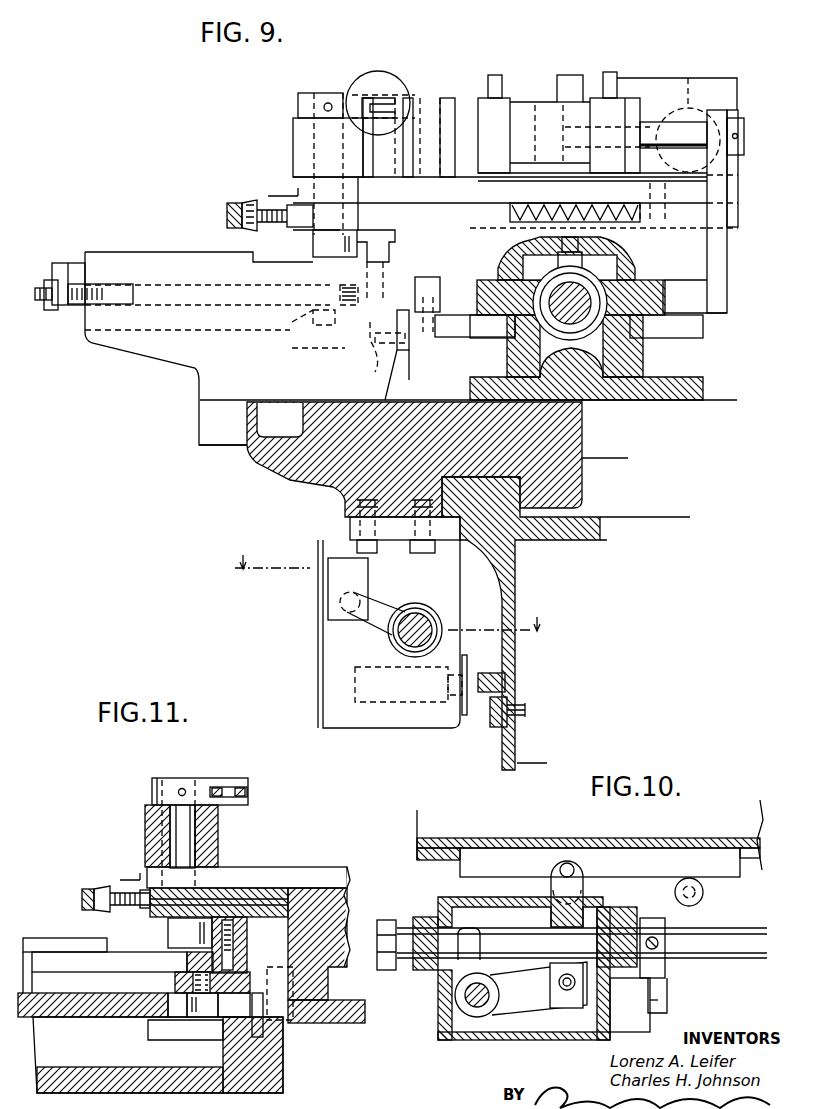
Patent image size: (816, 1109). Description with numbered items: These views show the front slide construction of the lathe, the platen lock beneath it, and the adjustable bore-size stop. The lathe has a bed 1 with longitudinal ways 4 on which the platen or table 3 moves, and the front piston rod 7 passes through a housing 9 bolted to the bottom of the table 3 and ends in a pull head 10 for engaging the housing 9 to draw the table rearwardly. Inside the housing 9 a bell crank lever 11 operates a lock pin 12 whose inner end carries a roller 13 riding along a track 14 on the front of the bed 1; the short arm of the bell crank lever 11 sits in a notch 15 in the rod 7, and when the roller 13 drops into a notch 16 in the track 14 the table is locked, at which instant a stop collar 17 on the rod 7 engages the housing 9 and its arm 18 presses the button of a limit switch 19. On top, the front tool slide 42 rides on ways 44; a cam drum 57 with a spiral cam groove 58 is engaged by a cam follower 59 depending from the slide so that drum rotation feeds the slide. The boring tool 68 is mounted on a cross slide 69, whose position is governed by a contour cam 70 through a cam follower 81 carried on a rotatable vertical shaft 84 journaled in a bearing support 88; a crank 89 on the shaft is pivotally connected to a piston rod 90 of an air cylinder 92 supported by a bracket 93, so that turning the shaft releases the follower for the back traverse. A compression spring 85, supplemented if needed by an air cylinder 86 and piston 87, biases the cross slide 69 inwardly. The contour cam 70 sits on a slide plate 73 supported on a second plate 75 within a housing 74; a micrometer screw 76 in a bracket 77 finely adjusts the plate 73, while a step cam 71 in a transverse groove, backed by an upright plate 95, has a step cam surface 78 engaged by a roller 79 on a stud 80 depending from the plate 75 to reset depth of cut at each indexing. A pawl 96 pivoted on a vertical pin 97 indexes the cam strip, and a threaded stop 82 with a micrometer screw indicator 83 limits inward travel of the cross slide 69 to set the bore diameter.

In FIG. 9, the bed 1 is at (517, 600).
In FIG. 10, the bed 1 is at (458, 830).
In FIG. 9, the platen or table 3 is at (275, 470).
In FIG. 9, the longitudinal ways 4 is at (508, 472).
In FIG. 9, the front piston rod 7 is at (435, 628).
In FIG. 10, the front piston rod 7 is at (745, 958).
In FIG. 9, the housing 9 is at (330, 657).
In FIG. 10, the housing 9 is at (437, 1030).
In FIG. 9, the pull head 10 is at (389, 598).
In FIG. 10, the pull head 10 is at (390, 920).
In FIG. 10, the bell crank lever 11 is at (508, 1018).
In FIG. 9, the lock pin 12 is at (403, 703).
In FIG. 10, the lock pin 12 is at (548, 913).
In FIG. 9, the roller 13 is at (462, 700).
In FIG. 10, the roller 13 is at (548, 882).
In FIG. 9, the track 14 is at (488, 673).
In FIG. 10, the track 14 is at (638, 860).
In FIG. 10, the notch 15 is at (462, 928).
In FIG. 10, the notch 16 is at (575, 855).
In FIG. 9, the stop collar 17 is at (415, 608).
In FIG. 10, the stop collar 17 is at (667, 945).
In FIG. 9, the arm 18 is at (370, 624).
In FIG. 10, the arm 18 is at (667, 1000).
In FIG. 9, the limit switch 19 is at (338, 582).
In FIG. 10, the limit switch 19 is at (645, 1025).
In FIG. 9, the front tool slide 42 is at (693, 254).
In FIG. 9, the ways 44 is at (660, 295).
In FIG. 9, the cam drum 57 is at (560, 332).
In FIG. 9, the spiral cam groove 58 is at (588, 330).
In FIG. 9, the cam follower 59 is at (585, 258).
In FIG. 9, the boring tool 68 is at (680, 111).
In FIG. 9, the cross slide 69 is at (740, 118).
In FIG. 11, the cross slide 69 is at (308, 867).
In FIG. 9, the contour cam 70 is at (366, 240).
In FIG. 11, the contour cam 70 is at (247, 928).
In FIG. 9, the step cam 71 is at (368, 332).
In FIG. 11, the step cam 71 is at (230, 1005).
In FIG. 9, the slide plate 73 is at (75, 268).
In FIG. 11, the slide plate 73 is at (57, 960).
In FIG. 9, the housing 74 is at (150, 350).
In FIG. 11, the housing 74 is at (68, 1018).
In FIG. 9, the plate 75 is at (79, 305).
In FIG. 11, the plate 75 is at (110, 997).
In FIG. 9, the micrometer screw 76 is at (37, 288).
In FIG. 9, the bracket 77 is at (52, 305).
In FIG. 11, the step cam surface 78 is at (182, 1017).
In FIG. 9, the roller 79 is at (292, 340).
In FIG. 11, the roller 79 is at (190, 1005).
In FIG. 9, the stud 80 is at (340, 296).
In FIG. 11, the stud 80 is at (175, 985).
In FIG. 9, the cam follower 81 is at (330, 246).
In FIG. 11, the cam follower 81 is at (182, 934).
In FIG. 9, the threaded stop 82 is at (272, 225).
In FIG. 11, the threaded stop 82 is at (246, 892).
In FIG. 9, the micrometer screw indicator 83 is at (250, 200).
In FIG. 11, the micrometer screw indicator 83 is at (104, 886).
In FIG. 9, the rotatable vertical shaft 84 is at (314, 141).
In FIG. 11, the rotatable vertical shaft 84 is at (176, 823).
In FIG. 9, the compression spring 85 is at (520, 220).
In FIG. 9, the air cylinder 86 is at (532, 100).
In FIG. 9, the piston 87 is at (566, 95).
In FIG. 9, the bearing support 88 is at (293, 120).
In FIG. 11, the bearing support 88 is at (147, 808).
In FIG. 9, the crank 89 is at (305, 93).
In FIG. 11, the crank 89 is at (206, 780).
In FIG. 11, the piston rod 90 is at (247, 792).
In FIG. 9, the air cylinder 92 is at (380, 71).
In FIG. 9, the bracket 93 is at (392, 103).
In FIG. 9, the upright plate 95 is at (402, 310).
In FIG. 11, the upright plate 95 is at (258, 993).
In FIG. 9, the pawl 96 is at (418, 330).
In FIG. 11, the pawl 96 is at (268, 1012).
In FIG. 9, the vertical pin 97 is at (438, 318).
In FIG. 11, the vertical pin 97 is at (298, 1022).